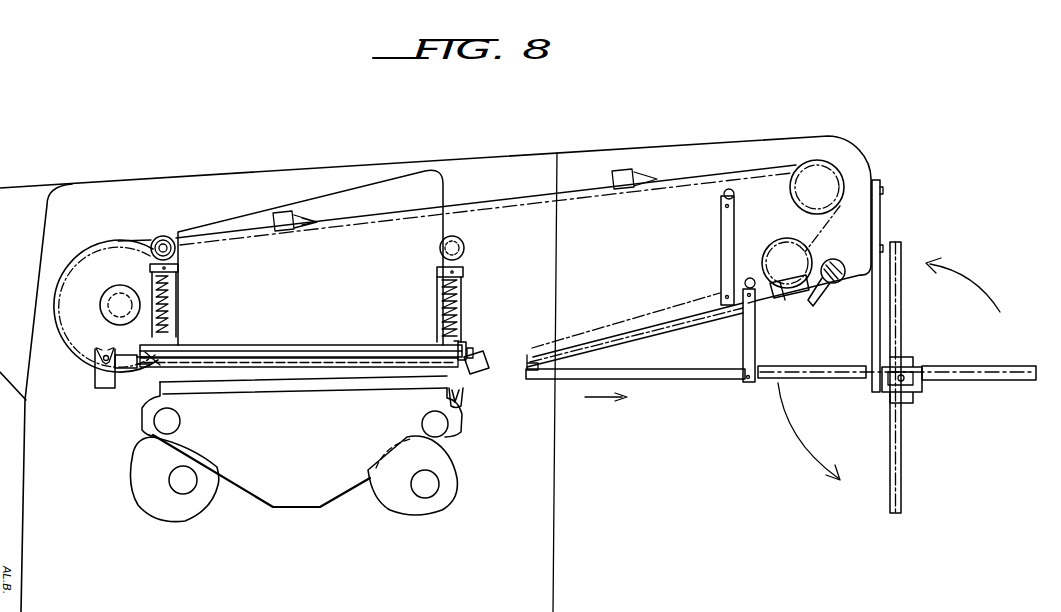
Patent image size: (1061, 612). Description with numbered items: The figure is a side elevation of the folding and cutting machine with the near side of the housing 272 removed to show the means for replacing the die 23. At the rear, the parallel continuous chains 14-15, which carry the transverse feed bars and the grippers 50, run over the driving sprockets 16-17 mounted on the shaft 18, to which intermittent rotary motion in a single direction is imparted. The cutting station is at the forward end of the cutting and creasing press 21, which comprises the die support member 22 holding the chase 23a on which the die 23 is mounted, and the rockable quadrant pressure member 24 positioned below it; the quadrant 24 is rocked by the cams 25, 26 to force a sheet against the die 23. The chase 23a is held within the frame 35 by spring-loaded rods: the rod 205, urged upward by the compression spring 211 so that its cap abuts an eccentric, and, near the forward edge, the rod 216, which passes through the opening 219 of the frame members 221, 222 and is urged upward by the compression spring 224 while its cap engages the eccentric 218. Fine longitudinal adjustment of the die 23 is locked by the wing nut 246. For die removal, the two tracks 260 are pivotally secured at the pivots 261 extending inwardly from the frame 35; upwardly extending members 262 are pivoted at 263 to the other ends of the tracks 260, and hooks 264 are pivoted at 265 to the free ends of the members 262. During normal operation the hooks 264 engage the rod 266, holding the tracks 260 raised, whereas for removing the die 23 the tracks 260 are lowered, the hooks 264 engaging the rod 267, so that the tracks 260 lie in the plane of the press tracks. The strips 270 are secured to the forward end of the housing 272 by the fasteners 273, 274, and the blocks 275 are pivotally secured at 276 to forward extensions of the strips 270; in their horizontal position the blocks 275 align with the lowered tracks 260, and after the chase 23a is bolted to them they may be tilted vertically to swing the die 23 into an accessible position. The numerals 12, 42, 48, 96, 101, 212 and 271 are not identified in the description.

The driving sprockets 16-17 is at (110, 265).
The shaft 18 is at (118, 314).
The chains 14-15 is at (205, 238).
The opening 219 is at (164, 237).
The compression spring 211 is at (176, 296).
The rod 205 is at (170, 318).
The frame 35 is at (313, 283).
The eccentric 218 is at (465, 246).
The frame member 222 is at (465, 271).
The compression spring 224 is at (460, 299).
The rod 216 is at (456, 318).
The frame member 221 is at (464, 346).
The locking wing nut 246 is at (474, 351).
The pivots 261 is at (507, 364).
The cutting and creasing press 21 is at (289, 343).
The die 23 is at (343, 334).
The die support member 22 is at (401, 346).
The shaft 212 is at (155, 367).
The block 12 is at (127, 354).
The fork 42 is at (106, 351).
The holder 48 is at (100, 366).
The rockable quadrant pressure member 24 is at (318, 426).
The hook 101 is at (464, 397).
The cam 26 is at (158, 519).
The cam 25 is at (395, 512).
The shaft hole 96 is at (180, 490).
The machine housing 272 is at (728, 146).
The side plate 271 is at (876, 176).
The fastener 273 is at (884, 191).
The fastener 274 is at (909, 360).
The rod 266 is at (735, 196).
The pivot 265 is at (733, 289).
The tracks 260 is at (705, 375).
The upwardly extending members 262 is at (757, 347).
The hooks 264 is at (750, 279).
The pivot 263 is at (747, 386).
The grippers 50 is at (787, 276).
The rod 267 is at (778, 292).
The strips 270 is at (870, 324).
The chase 23a is at (833, 378).
The blocks 275 is at (924, 391).
The pivot 276 is at (905, 373).